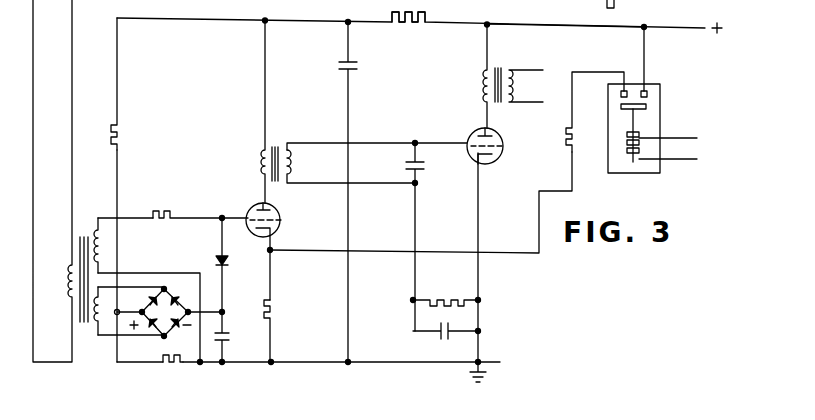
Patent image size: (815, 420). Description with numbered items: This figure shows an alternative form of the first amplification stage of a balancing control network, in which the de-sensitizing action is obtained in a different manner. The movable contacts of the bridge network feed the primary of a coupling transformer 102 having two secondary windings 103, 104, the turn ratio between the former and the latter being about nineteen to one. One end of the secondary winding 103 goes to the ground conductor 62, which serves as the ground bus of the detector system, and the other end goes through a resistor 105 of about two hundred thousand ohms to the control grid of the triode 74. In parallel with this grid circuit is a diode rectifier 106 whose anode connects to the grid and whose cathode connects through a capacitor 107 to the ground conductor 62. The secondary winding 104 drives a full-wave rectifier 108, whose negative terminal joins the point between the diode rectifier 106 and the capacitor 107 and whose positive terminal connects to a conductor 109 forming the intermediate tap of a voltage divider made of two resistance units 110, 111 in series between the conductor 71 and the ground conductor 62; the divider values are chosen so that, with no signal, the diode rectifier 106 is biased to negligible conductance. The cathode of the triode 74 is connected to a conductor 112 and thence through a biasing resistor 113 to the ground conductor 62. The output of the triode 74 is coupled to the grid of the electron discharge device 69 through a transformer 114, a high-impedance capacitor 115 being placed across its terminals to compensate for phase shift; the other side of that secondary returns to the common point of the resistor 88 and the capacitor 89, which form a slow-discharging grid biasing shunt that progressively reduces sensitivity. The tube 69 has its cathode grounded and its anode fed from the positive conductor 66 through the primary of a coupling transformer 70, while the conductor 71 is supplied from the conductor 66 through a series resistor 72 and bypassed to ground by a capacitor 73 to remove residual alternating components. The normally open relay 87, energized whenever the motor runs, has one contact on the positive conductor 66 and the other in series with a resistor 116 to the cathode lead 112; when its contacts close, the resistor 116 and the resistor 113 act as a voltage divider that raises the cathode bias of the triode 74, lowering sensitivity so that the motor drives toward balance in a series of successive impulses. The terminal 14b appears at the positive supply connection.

The terminal 14b is at (631, 4).
The ground conductor 62 is at (305, 363).
The positive conductor 66 is at (515, 24).
The electron discharge device 69 is at (500, 156).
The coupling transformer 70 is at (492, 70).
The conductor 71 is at (180, 18).
The series resistor 72 is at (430, 19).
The capacitor 73 is at (361, 68).
The triode 74 is at (281, 226).
The relay 87 is at (660, 120).
The resistor 88 is at (445, 292).
The capacitor 89 is at (443, 337).
The coupling transformer 102 is at (83, 233).
The secondary winding 103 is at (100, 250).
The secondary winding 104 is at (98, 332).
The resistor 105 is at (169, 215).
The diode rectifier 106 is at (217, 258).
The capacitor 107 is at (228, 336).
The rectifier 108 is at (169, 313).
The conductor 109 is at (117, 186).
The resistance unit 110 is at (121, 146).
The resistance unit 111 is at (175, 368).
The conductor 112 is at (272, 282).
The biasing resistor 113 is at (276, 322).
The transformer 114 is at (276, 146).
The high-impedance capacitor 115 is at (424, 168).
The resistor 116 is at (567, 138).